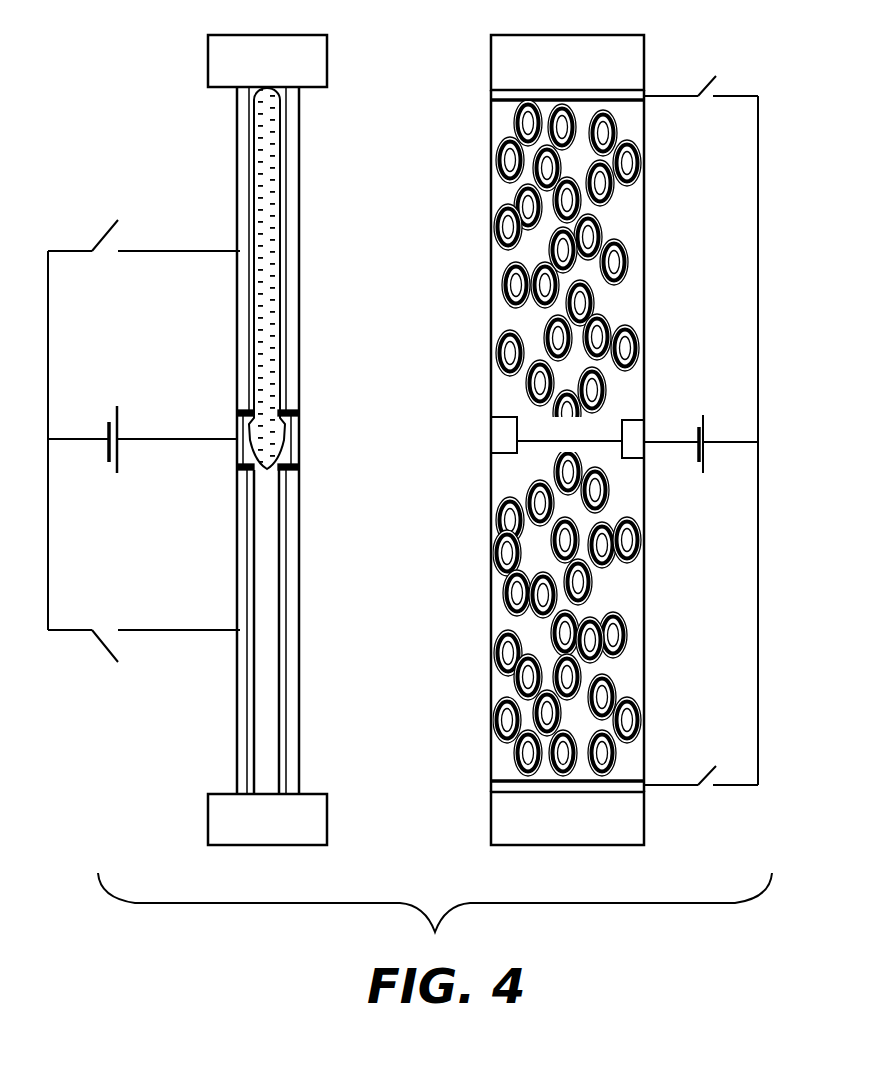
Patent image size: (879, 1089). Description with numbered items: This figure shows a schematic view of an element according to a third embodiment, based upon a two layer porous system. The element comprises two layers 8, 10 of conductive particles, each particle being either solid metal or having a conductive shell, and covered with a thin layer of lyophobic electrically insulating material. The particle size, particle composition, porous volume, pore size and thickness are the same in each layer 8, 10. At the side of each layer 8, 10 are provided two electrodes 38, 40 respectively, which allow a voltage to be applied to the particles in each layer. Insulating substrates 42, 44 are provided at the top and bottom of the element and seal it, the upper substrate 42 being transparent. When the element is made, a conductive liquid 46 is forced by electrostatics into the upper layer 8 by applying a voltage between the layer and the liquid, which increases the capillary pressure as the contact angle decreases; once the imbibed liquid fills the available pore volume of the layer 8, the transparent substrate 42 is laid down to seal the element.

The layer 8 is at (300, 262).
The layer 10 is at (300, 570).
The electrode 38 is at (235, 140).
The electrode 40 is at (237, 697).
The insulating substrate 42 is at (208, 55).
The insulating substrate 44 is at (208, 812).
The conductive liquid 46 is at (268, 195).